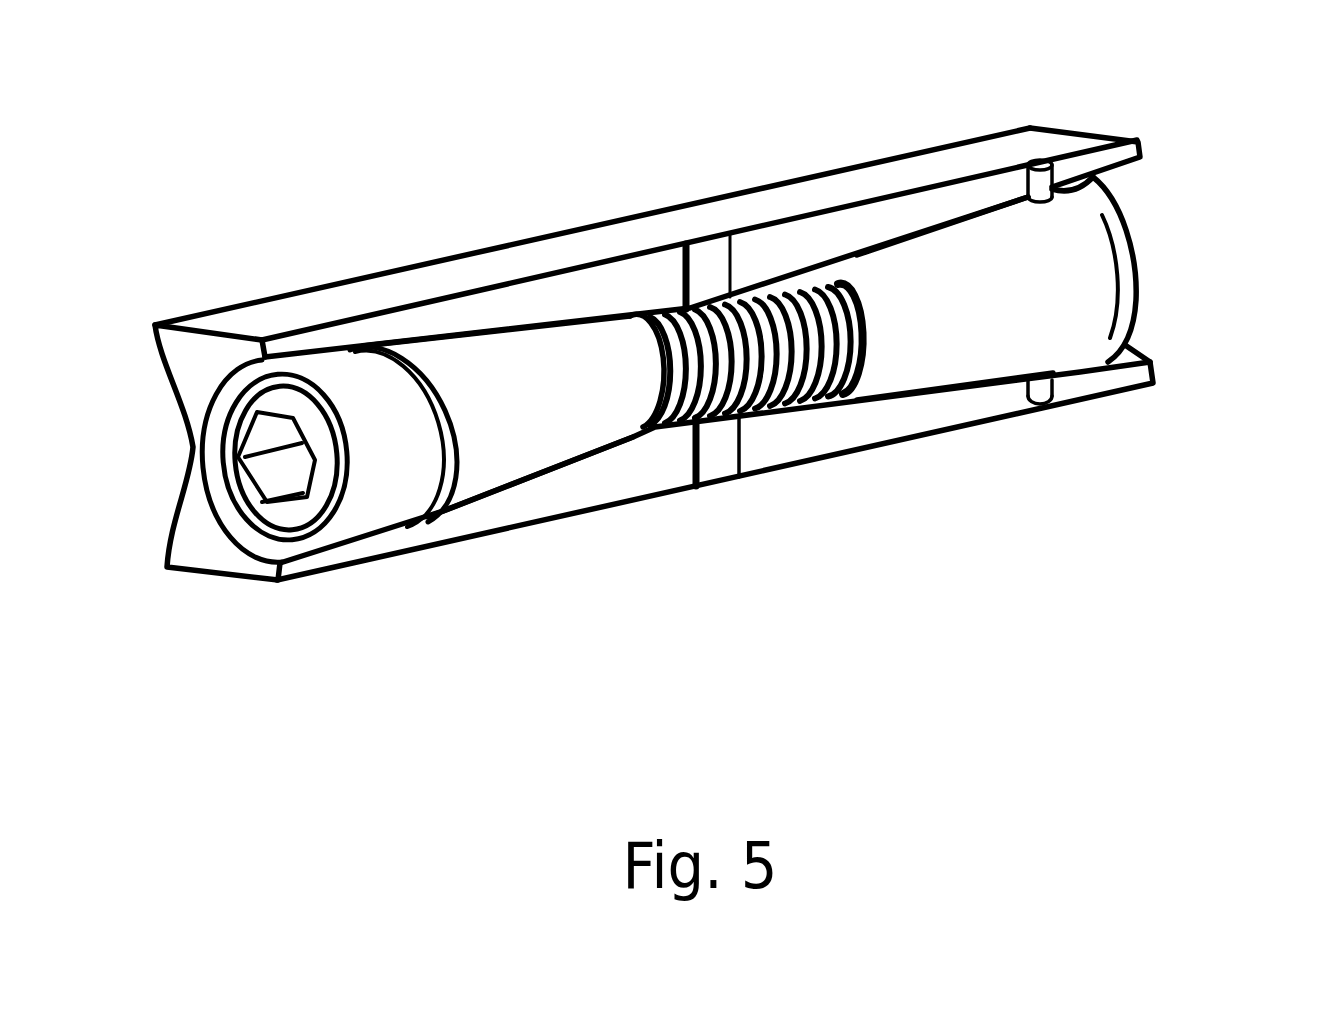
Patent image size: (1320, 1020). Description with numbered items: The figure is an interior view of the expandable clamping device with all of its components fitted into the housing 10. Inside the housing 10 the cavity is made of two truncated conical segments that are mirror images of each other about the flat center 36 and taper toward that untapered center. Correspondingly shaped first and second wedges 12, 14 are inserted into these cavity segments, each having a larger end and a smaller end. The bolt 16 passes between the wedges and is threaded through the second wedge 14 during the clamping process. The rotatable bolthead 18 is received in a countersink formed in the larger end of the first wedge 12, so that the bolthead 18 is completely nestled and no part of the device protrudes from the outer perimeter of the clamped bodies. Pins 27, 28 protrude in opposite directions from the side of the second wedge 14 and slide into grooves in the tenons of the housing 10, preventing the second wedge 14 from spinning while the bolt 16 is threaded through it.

The housing 10 is at (485, 243).
The first wedge 12 is at (480, 488).
The second wedge 14 is at (1130, 330).
The bolt 16 is at (773, 293).
The bolthead 18 is at (353, 522).
The pin 27 is at (1027, 177).
The pin 28 is at (1055, 388).
The flat center 36 is at (722, 452).